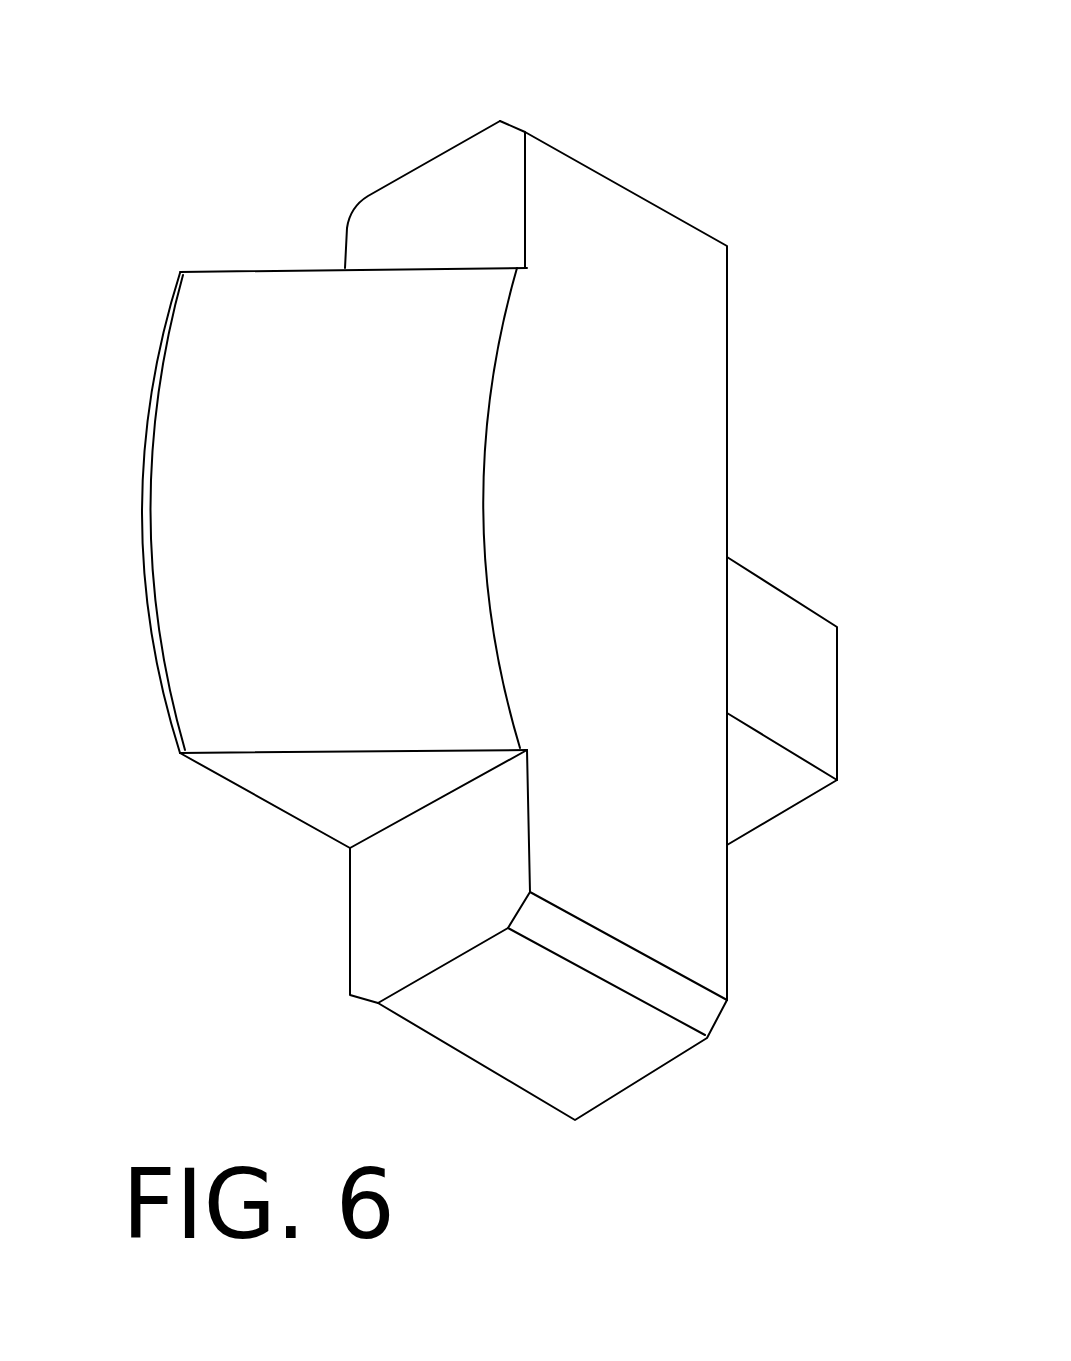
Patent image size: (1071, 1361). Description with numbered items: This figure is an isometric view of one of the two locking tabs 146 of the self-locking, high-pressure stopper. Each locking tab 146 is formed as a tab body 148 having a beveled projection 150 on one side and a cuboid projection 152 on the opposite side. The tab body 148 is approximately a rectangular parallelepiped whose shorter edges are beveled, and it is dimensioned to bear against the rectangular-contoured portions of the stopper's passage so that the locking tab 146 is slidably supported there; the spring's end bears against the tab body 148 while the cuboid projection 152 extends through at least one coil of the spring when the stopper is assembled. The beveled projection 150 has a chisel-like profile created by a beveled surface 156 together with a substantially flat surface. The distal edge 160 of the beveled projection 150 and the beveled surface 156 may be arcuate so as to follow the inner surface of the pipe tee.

The locking tab 146 is at (672, 160).
The tab body 148 is at (658, 448).
The beveled projection 150 is at (337, 800).
The cuboid projection 152 is at (765, 792).
The beveled surface 156 is at (235, 320).
The distal edge 160 is at (140, 532).